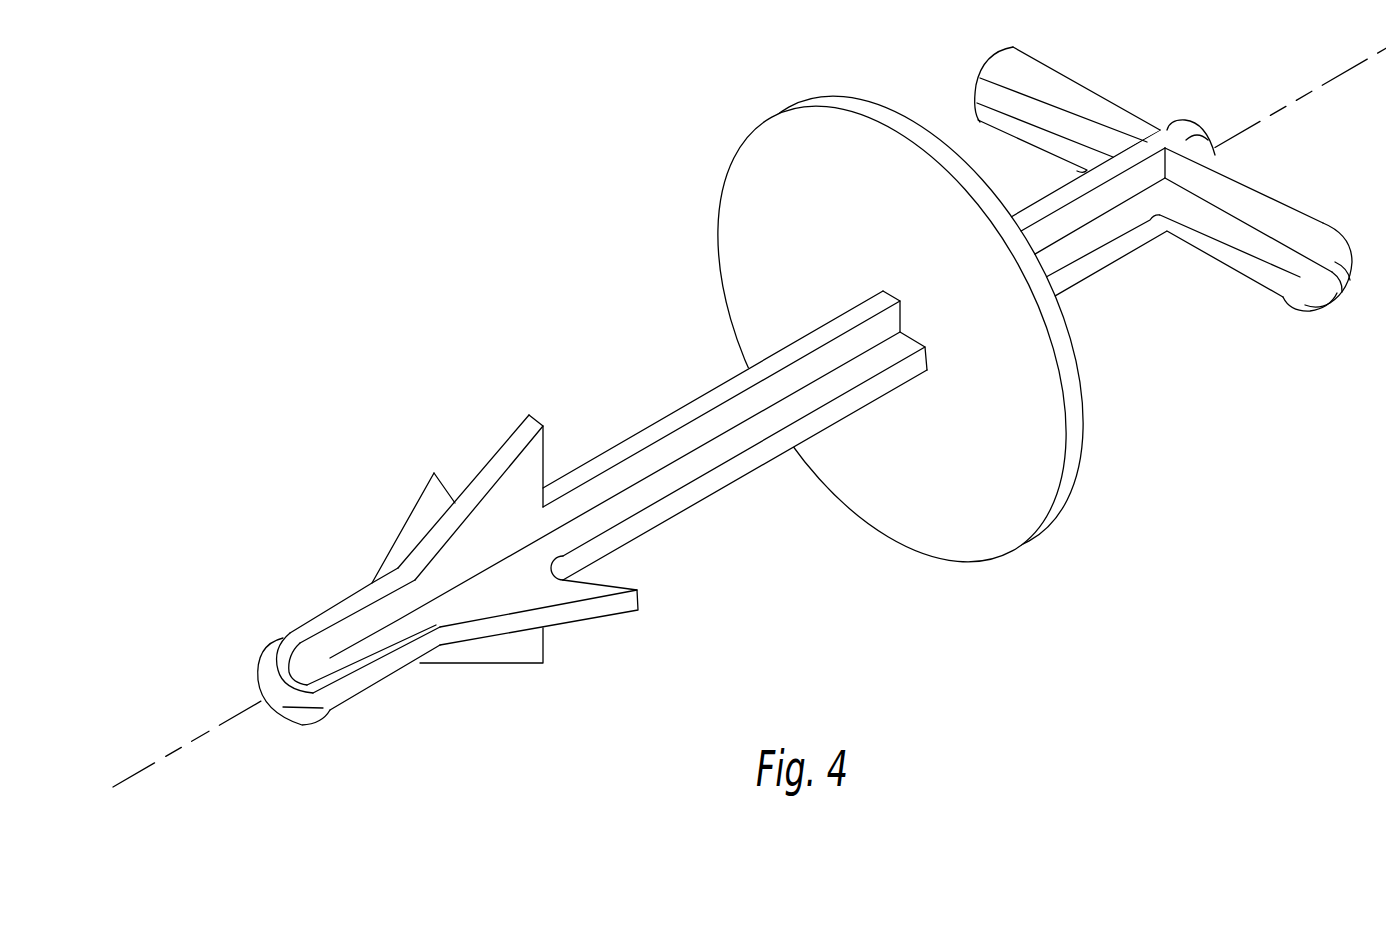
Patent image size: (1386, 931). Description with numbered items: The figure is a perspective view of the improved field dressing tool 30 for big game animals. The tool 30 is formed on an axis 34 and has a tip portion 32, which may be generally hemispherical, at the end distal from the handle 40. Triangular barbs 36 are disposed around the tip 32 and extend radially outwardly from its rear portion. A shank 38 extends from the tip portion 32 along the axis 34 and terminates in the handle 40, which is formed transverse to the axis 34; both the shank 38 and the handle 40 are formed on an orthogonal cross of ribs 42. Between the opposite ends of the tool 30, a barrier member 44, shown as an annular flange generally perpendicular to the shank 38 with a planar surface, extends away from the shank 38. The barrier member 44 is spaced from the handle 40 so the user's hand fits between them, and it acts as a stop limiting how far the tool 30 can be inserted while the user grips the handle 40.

The tool 30 is at (805, 378).
The tip portion 32 is at (358, 577).
The axis 34 is at (180, 750).
The triangular barbs 36 is at (522, 432).
The shank 38 is at (736, 422).
The handle 40 is at (1092, 75).
The ribs 42 is at (740, 408).
The barrier member 44 is at (752, 162).